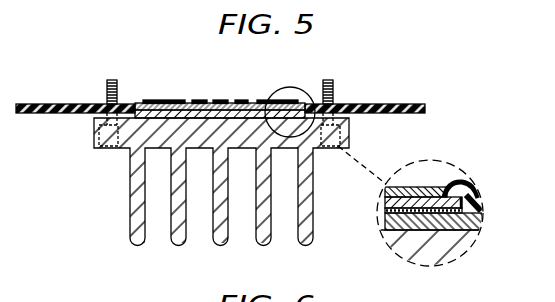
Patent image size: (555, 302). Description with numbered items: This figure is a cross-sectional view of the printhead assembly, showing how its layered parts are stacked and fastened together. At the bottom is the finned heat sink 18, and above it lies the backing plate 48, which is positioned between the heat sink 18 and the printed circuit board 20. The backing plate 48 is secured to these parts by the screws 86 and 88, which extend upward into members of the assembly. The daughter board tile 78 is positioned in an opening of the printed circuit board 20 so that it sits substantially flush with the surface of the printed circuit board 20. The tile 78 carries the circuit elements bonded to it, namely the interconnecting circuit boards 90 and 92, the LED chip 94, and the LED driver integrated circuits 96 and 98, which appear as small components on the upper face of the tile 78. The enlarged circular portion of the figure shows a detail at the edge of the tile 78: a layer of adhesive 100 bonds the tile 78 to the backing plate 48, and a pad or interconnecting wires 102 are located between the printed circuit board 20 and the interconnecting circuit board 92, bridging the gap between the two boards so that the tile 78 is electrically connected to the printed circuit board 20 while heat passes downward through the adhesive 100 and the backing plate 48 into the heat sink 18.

The heat sink 18 is at (130, 210).
The printed circuit board 20 is at (53, 104).
The backing plate 48 is at (207, 148).
The daughter board tile 78 is at (182, 103).
The screw 86 is at (95, 133).
The screw 88 is at (350, 128).
The interconnecting circuit board 90 is at (152, 100).
The interconnecting circuit board 92 is at (263, 100).
The LED chip 94 is at (220, 100).
The LED driver integrated circuit 96 is at (197, 100).
The LED driver integrated circuit 98 is at (241, 100).
The adhesive 100 is at (378, 211).
The interconnecting wires 102 is at (442, 183).